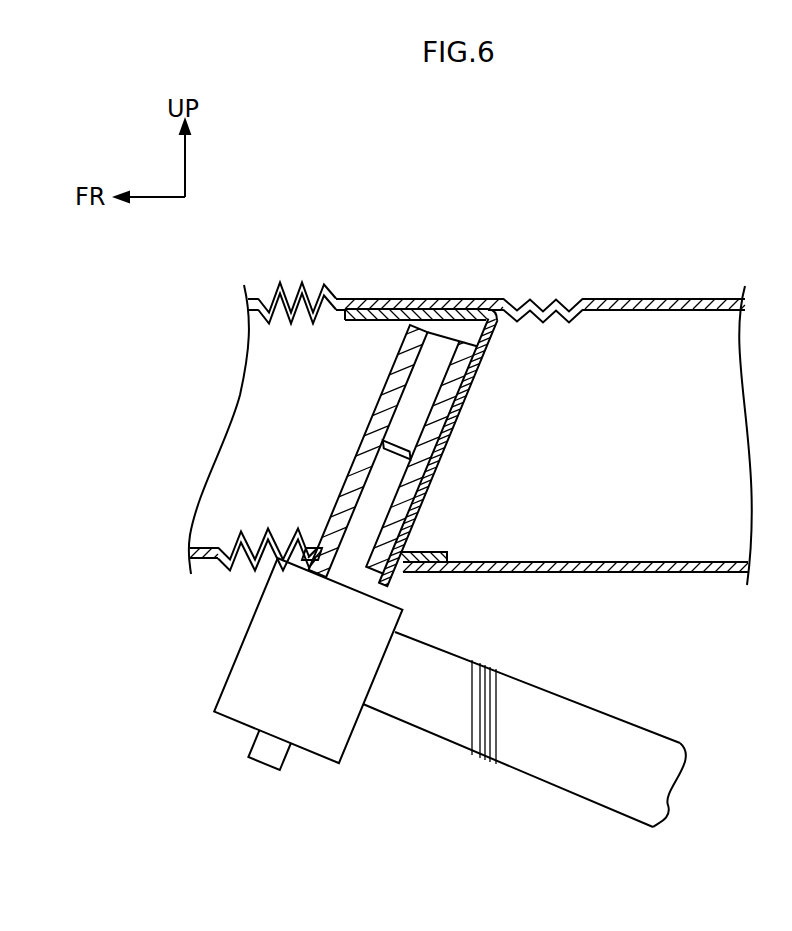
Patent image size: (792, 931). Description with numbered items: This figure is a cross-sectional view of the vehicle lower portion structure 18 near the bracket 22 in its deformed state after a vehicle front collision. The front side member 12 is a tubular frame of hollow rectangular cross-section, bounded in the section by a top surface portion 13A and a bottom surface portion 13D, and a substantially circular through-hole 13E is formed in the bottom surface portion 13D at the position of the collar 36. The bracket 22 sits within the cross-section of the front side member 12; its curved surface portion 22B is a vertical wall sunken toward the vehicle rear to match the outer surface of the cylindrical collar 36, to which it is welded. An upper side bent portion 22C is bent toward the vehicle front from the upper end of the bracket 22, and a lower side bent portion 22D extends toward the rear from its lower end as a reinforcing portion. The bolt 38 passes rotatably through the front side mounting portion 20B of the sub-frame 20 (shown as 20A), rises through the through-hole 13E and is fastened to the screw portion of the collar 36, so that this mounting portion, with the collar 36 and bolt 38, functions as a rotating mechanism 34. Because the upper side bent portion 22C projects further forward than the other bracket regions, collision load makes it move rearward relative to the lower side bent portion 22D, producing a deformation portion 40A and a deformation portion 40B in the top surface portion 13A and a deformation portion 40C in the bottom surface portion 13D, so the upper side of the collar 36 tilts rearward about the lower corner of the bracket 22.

The front side member 12 is at (446, 397).
The top surface portion 13A is at (496, 272).
The bottom surface portion 13D is at (660, 562).
The through-hole 13E is at (239, 507).
The vehicle lower portion structure 18 is at (417, 382).
The sub-frame 20 is at (419, 692).
The arm portion 20A is at (555, 693).
The front side mounting portion 20B is at (257, 672).
The bracket 22 is at (448, 408).
The curved surface portion 22B is at (443, 463).
The upper side bent portion 22C is at (400, 305).
The lower side bent portion 22D is at (435, 552).
The rotating mechanism 34 is at (380, 451).
The collar 36 is at (376, 434).
The bolt 38 is at (375, 503).
The deformation portion 40A is at (303, 282).
The deformation portion 40B is at (538, 300).
The deformation portion 40C is at (248, 540).